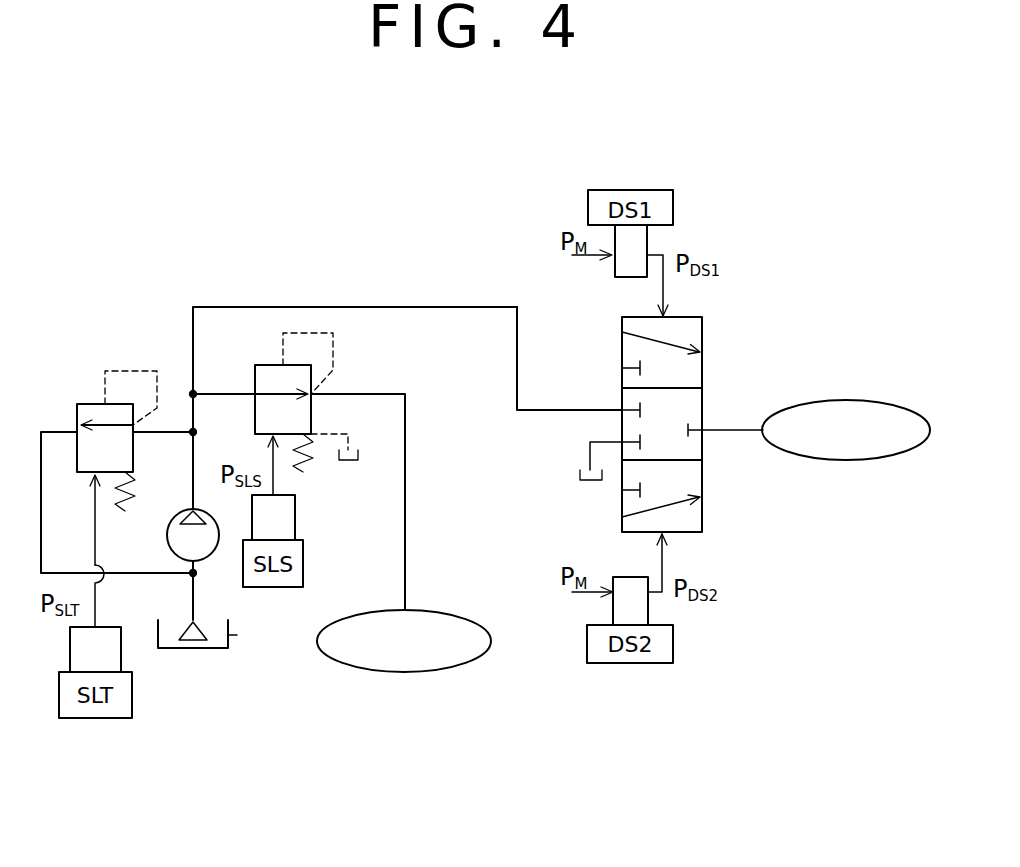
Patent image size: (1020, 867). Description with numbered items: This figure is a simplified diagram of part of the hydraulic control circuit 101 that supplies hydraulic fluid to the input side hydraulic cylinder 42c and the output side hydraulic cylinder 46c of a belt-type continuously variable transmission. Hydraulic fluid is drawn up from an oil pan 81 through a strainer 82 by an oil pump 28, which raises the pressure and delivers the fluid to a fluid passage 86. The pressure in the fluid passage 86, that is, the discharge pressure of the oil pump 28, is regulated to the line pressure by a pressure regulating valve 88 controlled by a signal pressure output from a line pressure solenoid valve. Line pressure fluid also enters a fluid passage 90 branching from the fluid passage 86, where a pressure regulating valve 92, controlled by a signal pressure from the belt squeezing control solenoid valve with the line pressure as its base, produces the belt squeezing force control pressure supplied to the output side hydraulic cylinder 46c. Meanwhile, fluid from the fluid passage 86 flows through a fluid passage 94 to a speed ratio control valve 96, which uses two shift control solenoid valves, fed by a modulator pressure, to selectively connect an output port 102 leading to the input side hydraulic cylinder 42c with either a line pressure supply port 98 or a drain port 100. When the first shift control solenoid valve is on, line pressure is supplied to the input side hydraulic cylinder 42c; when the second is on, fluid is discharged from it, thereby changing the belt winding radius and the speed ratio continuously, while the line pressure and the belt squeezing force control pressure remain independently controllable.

The hydraulic control circuit 101 is at (408, 220).
The fluid passage 94 is at (235, 306).
The pressure regulating valve 88 is at (88, 378).
The fluid passage 86 is at (191, 490).
The oil pump 28 is at (178, 543).
The strainer 82 is at (196, 650).
The oil pan 81 is at (238, 635).
The fluid passage 90 is at (220, 393).
The pressure regulating valve 92 is at (345, 379).
The output side hydraulic cylinder 46c is at (402, 663).
The speed ratio control valve 96 is at (727, 323).
The line pressure supply port 98 is at (620, 410).
The drain port 100 is at (622, 442).
The output port 102 is at (704, 430).
The input side hydraulic cylinder 42c is at (831, 400).